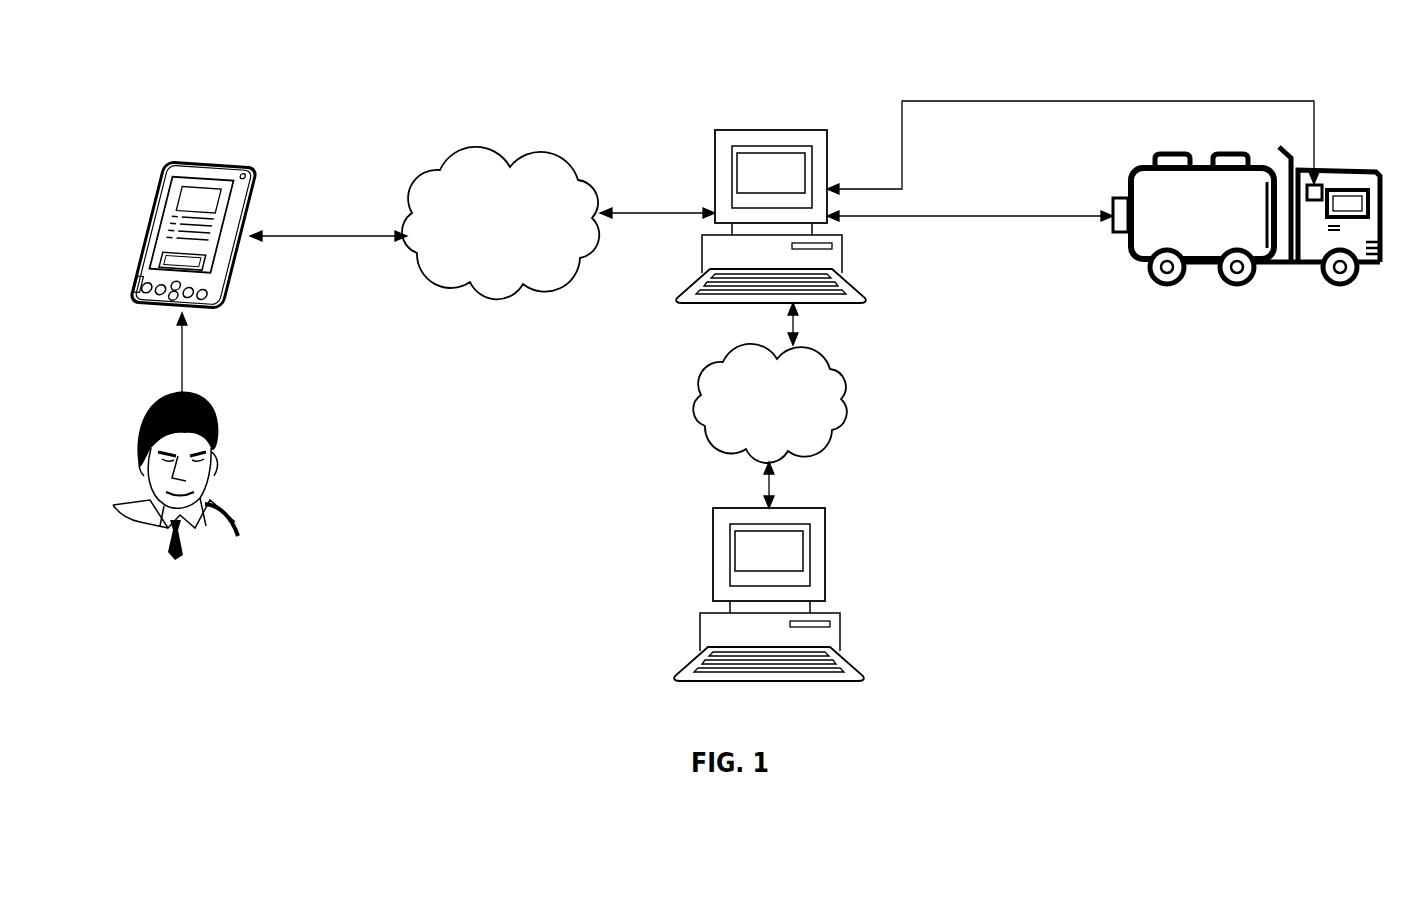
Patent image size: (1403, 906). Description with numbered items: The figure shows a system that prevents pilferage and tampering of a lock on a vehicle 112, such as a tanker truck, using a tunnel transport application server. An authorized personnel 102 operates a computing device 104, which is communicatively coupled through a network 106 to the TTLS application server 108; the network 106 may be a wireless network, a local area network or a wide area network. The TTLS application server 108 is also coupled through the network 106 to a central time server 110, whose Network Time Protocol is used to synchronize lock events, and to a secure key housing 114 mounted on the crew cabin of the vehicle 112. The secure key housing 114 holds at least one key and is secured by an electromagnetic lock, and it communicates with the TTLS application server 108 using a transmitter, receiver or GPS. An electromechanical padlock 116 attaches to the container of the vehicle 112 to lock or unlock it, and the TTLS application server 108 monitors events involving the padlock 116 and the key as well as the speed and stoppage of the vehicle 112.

The authorized personnel 102 is at (230, 517).
The computing device 104 is at (238, 272).
The network 106 is at (487, 148).
The TTLS application server 108 is at (760, 130).
The central time server 110 is at (827, 560).
The vehicle 112 is at (1199, 263).
The secure key housing 114 is at (1323, 185).
The electromechanical padlock 116 is at (1118, 234).